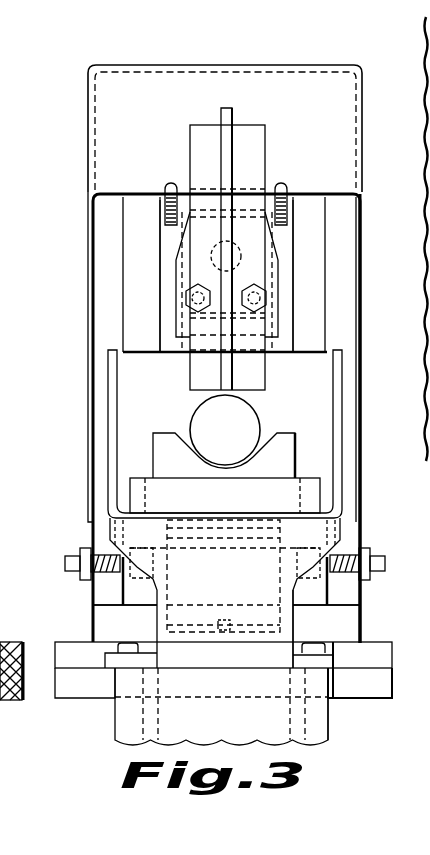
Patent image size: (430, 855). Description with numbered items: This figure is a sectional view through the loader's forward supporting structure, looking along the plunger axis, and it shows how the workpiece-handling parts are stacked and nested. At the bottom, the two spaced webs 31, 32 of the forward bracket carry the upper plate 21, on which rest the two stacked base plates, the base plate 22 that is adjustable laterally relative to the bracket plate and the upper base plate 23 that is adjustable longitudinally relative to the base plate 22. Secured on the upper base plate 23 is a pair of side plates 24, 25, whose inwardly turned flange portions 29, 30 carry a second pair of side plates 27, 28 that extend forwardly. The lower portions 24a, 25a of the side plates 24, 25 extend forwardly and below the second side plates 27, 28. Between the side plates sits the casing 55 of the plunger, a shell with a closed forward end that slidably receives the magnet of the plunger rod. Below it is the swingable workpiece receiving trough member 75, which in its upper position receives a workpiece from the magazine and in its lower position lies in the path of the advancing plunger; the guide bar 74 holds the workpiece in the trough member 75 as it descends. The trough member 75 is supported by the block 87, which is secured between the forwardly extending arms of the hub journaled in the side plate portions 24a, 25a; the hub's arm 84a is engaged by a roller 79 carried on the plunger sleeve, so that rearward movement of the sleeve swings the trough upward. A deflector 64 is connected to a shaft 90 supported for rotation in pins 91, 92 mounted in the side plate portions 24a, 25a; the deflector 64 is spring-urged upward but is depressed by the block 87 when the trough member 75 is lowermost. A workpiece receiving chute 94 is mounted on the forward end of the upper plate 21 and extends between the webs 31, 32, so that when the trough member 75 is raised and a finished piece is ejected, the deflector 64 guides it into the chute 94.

The upper plate 21 is at (59, 698).
The base plate 22 is at (390, 660).
The upper base plate 23 is at (362, 626).
The side plate 24 is at (102, 293).
The lower portion of side plate 24a is at (100, 529).
The side plate 25 is at (345, 286).
The lower portion of side plate 25a is at (348, 537).
The side plate 27 is at (160, 252).
The side plate 28 is at (292, 251).
The inwardly turned flange portion 29 is at (152, 293).
The inwardly turned flange portion 30 is at (322, 293).
The web 31 is at (115, 718).
The web 32 is at (328, 718).
The casing 55 is at (240, 438).
The deflector 64 is at (183, 632).
The guide bar 74 is at (232, 120).
The trough member 75 is at (162, 433).
The roller 79 is at (0, 367).
The arm 84a is at (0, 330).
The block 87 is at (240, 507).
The shaft 90 is at (188, 578).
The pin 91 is at (74, 573).
The pin 92 is at (370, 572).
The workpiece receiving chute 94 is at (297, 625).